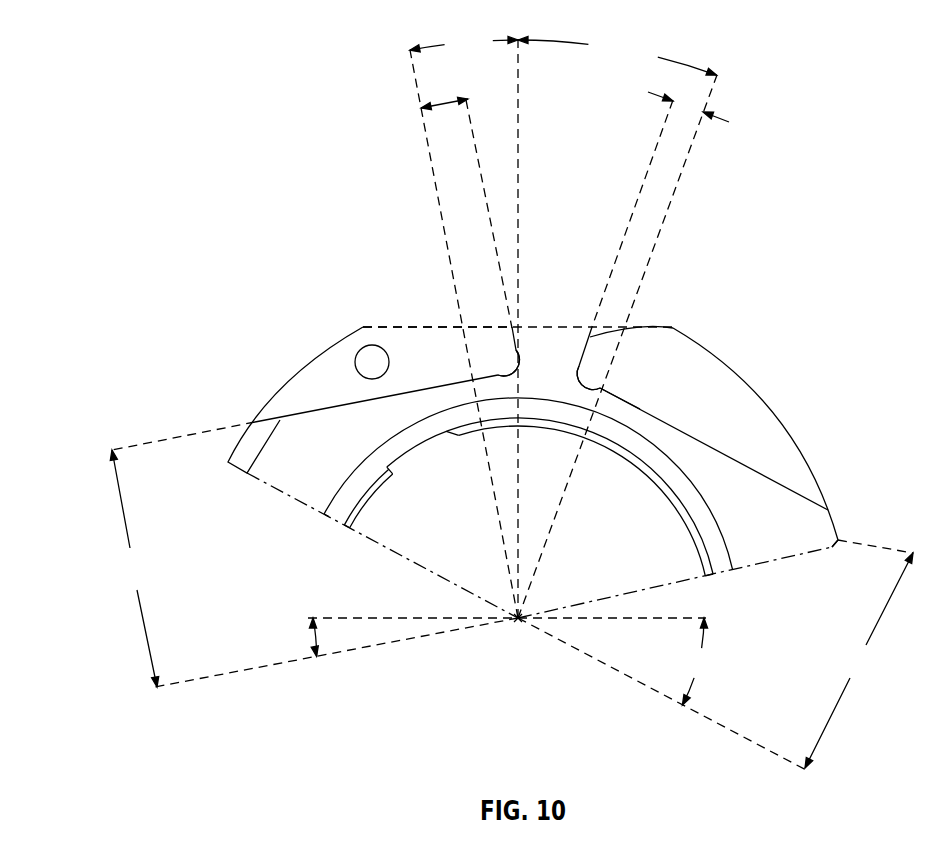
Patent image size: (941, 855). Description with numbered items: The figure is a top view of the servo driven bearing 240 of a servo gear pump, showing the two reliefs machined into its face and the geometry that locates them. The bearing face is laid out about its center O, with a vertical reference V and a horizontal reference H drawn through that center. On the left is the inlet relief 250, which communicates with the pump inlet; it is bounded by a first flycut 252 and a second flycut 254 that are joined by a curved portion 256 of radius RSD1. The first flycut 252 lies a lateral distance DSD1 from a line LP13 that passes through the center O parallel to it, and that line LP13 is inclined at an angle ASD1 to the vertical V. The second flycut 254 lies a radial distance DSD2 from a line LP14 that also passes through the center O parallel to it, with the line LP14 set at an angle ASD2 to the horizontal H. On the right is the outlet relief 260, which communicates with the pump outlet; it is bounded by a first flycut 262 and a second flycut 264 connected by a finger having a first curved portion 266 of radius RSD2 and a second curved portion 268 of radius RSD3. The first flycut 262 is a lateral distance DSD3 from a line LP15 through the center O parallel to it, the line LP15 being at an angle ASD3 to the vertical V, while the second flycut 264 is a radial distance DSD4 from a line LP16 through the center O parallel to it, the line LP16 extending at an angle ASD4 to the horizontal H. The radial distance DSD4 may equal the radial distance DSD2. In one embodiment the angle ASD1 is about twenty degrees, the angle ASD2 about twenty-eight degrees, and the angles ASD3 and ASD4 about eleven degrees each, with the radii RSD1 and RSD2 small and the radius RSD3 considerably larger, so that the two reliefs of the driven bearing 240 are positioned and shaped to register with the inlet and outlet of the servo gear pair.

The servo driven bearing 240 is at (247, 172).
The inlet relief 250 is at (330, 365).
The first flycut 252 is at (500, 366).
The second flycut 254 is at (298, 412).
The curved portion 256 is at (494, 362).
The outlet relief 260 is at (792, 452).
The first flycut 262 is at (590, 376).
The second flycut 264 is at (807, 500).
The first curved portion 266 is at (645, 325).
The second curved portion 268 is at (640, 408).
The vertical V is at (518, 97).
The horizontal H is at (392, 617).
The center O is at (520, 636).
The line parallel to the first flycut LP13 is at (437, 190).
The line parallel to the second flycut LP14 is at (220, 677).
The line parallel to the first flycut LP15 is at (678, 182).
The line parallel to the second flycut LP16 is at (634, 680).
The angle ASD1 is at (464, 44).
The angle ASD2 is at (312, 638).
The angle ASD3 is at (617, 55).
The angle ASD4 is at (700, 661).
The lateral distance DSD1 is at (442, 105).
The radial distance DSD2 is at (180, 554).
The lateral distance DSD3 is at (729, 122).
The radial distance DSD4 is at (859, 654).
The radius RSD1 is at (477, 327).
The radius RSD2 is at (590, 376).
The radius RSD3 is at (609, 394).